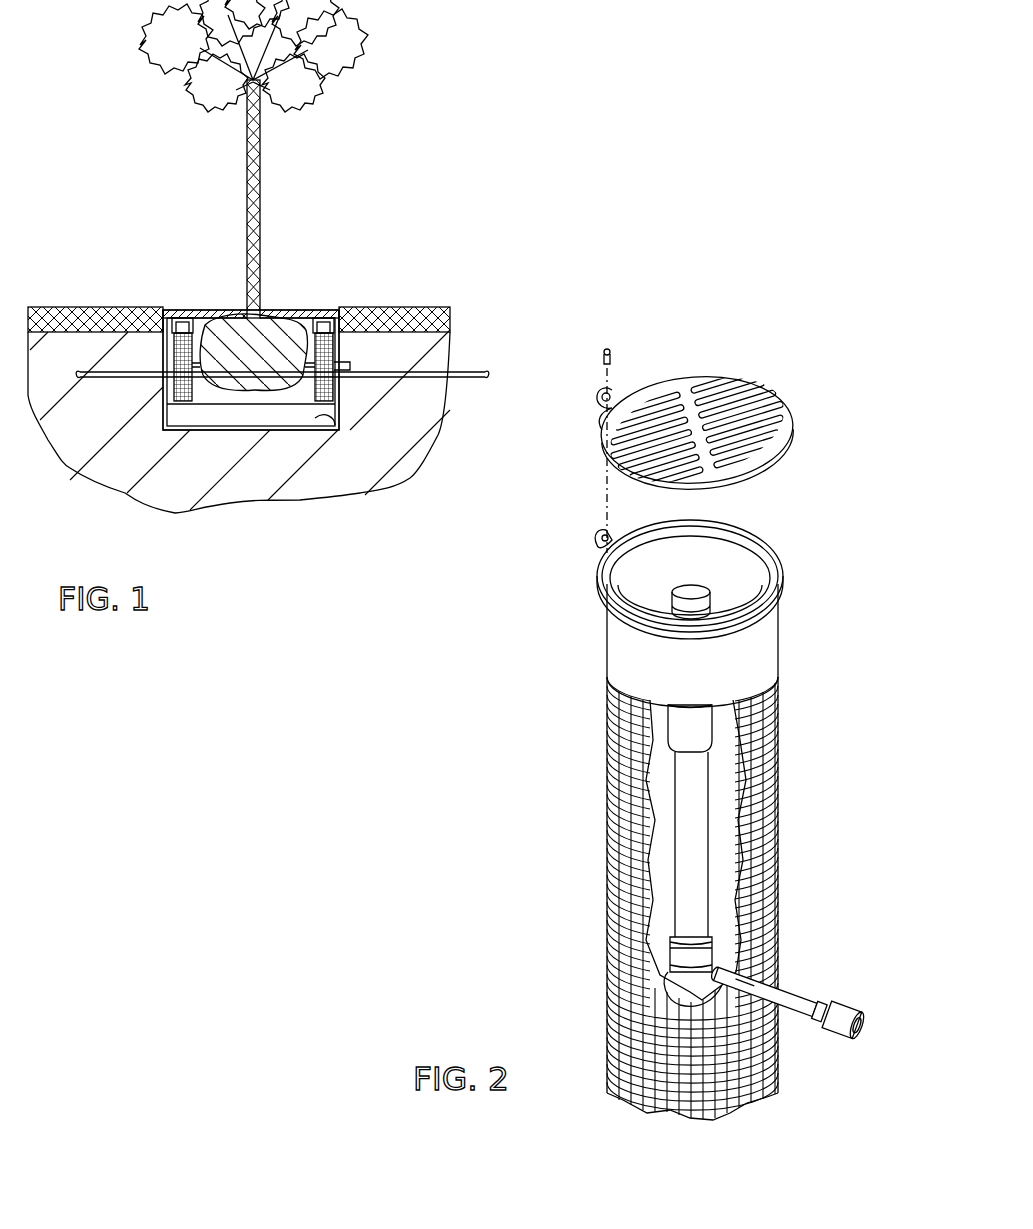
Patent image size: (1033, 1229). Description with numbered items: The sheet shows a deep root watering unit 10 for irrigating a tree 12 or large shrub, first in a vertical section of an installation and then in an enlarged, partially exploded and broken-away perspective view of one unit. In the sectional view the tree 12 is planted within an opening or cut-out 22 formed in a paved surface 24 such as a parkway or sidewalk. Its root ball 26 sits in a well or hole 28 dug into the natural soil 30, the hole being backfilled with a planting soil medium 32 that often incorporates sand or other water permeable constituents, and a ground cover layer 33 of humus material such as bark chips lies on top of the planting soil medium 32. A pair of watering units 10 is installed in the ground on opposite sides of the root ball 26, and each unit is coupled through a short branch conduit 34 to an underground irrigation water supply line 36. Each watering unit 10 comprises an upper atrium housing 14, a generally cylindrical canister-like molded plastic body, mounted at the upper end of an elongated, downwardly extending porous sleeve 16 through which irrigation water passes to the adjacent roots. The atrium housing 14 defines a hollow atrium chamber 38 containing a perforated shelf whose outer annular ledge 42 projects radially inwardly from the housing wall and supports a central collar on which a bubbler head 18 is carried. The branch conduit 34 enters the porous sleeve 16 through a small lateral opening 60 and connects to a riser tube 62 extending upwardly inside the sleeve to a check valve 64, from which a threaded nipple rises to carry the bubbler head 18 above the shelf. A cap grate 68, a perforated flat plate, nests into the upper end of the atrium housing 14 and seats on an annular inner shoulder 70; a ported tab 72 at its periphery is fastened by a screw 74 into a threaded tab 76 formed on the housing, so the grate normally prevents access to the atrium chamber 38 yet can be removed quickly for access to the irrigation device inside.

In FIG. 1, the deep root watering unit 10 is at (350, 340).
In FIG. 2, the deep root watering unit 10 is at (533, 855).
In FIG. 1, the tree 12 is at (272, 148).
In FIG. 1, the upper atrium housing 14 is at (195, 325).
In FIG. 2, the upper atrium housing 14 is at (605, 655).
In FIG. 1, the porous sleeve 16 is at (180, 362).
In FIG. 2, the porous sleeve 16 is at (768, 772).
In FIG. 2, the bubbler head 18 is at (690, 600).
In FIG. 1, the opening or cut-out 22 is at (166, 312).
In FIG. 1, the paved surface 24 is at (82, 312).
In FIG. 1, the root ball 26 is at (245, 365).
In FIG. 1, the well or hole 28 is at (312, 426).
In FIG. 1, the natural soil 30 is at (70, 445).
In FIG. 1, the planting soil medium 32 is at (196, 422).
In FIG. 1, the ground cover layer 33 is at (280, 312).
In FIG. 1, the branch conduit 34 is at (352, 367).
In FIG. 2, the branch conduit 34 is at (800, 988).
In FIG. 1, the irrigation water supply line 36 is at (452, 378).
In FIG. 2, the atrium chamber 38 is at (672, 570).
In FIG. 2, the outer annular ledge 42 is at (645, 598).
In FIG. 2, the lateral opening 60 is at (740, 960).
In FIG. 2, the riser tube 62 is at (705, 865).
In FIG. 2, the check valve 64 is at (680, 728).
In FIG. 2, the cap grate 68 is at (750, 395).
In FIG. 2, the annular inner shoulder 70 is at (765, 560).
In FIG. 2, the ported tab 72 is at (612, 393).
In FIG. 2, the screw 74 is at (600, 356).
In FIG. 2, the threaded tab 76 is at (598, 541).